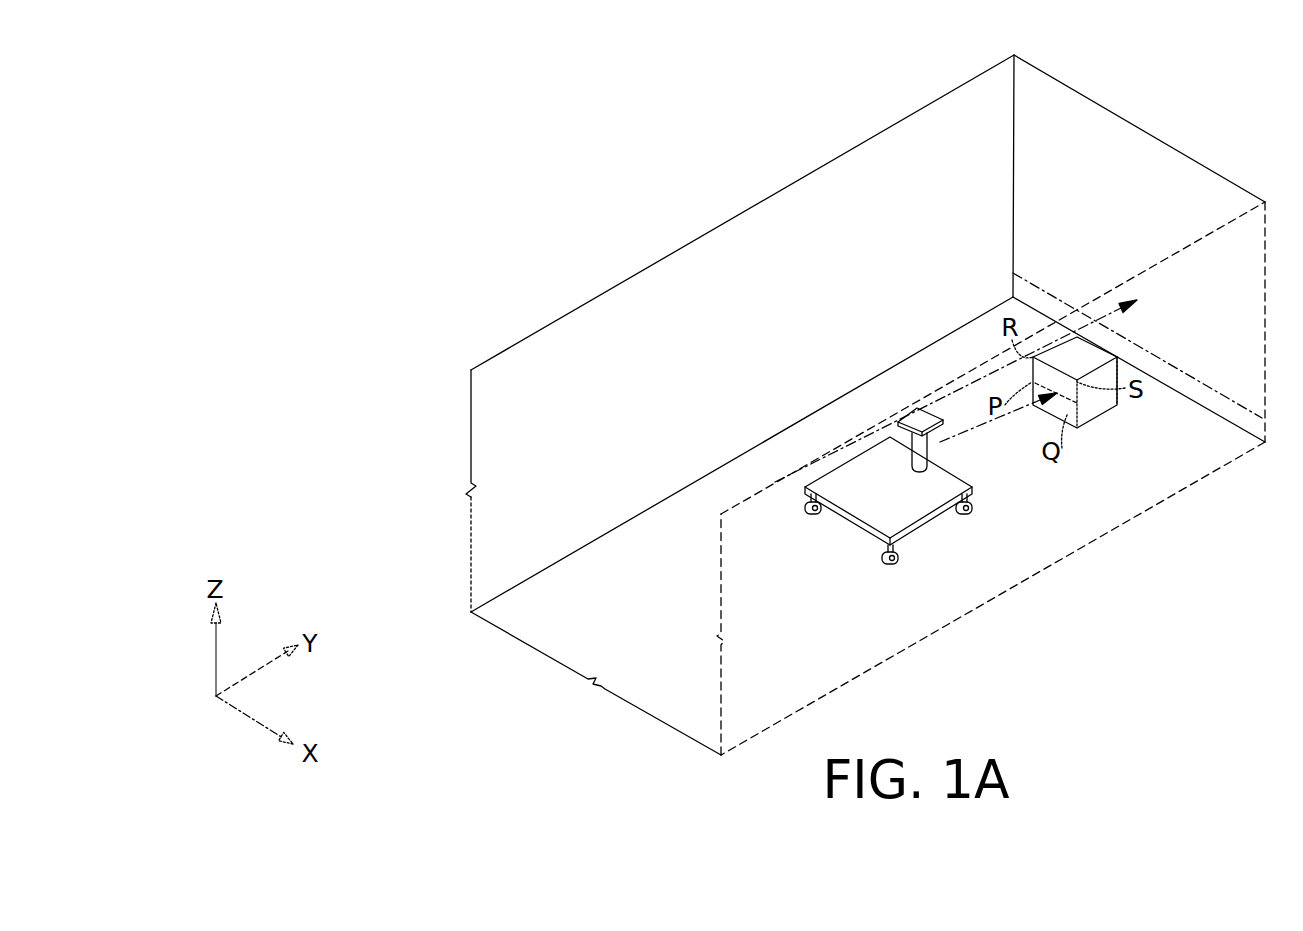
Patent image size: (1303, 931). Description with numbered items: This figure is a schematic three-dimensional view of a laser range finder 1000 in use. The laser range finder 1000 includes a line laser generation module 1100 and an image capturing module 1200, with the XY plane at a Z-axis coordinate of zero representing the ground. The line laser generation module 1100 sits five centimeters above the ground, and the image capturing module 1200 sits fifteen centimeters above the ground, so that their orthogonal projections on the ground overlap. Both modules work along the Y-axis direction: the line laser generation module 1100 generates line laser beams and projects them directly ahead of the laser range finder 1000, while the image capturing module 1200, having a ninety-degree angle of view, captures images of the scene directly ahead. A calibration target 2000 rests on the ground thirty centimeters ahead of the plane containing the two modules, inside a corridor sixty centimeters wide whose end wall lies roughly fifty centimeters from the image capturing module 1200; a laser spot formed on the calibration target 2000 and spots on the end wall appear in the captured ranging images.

The laser range finder 1000 is at (918, 474).
The line laser generation module 1100 is at (963, 478).
The image capturing module 1200 is at (903, 410).
The calibration target 2000 is at (1103, 403).